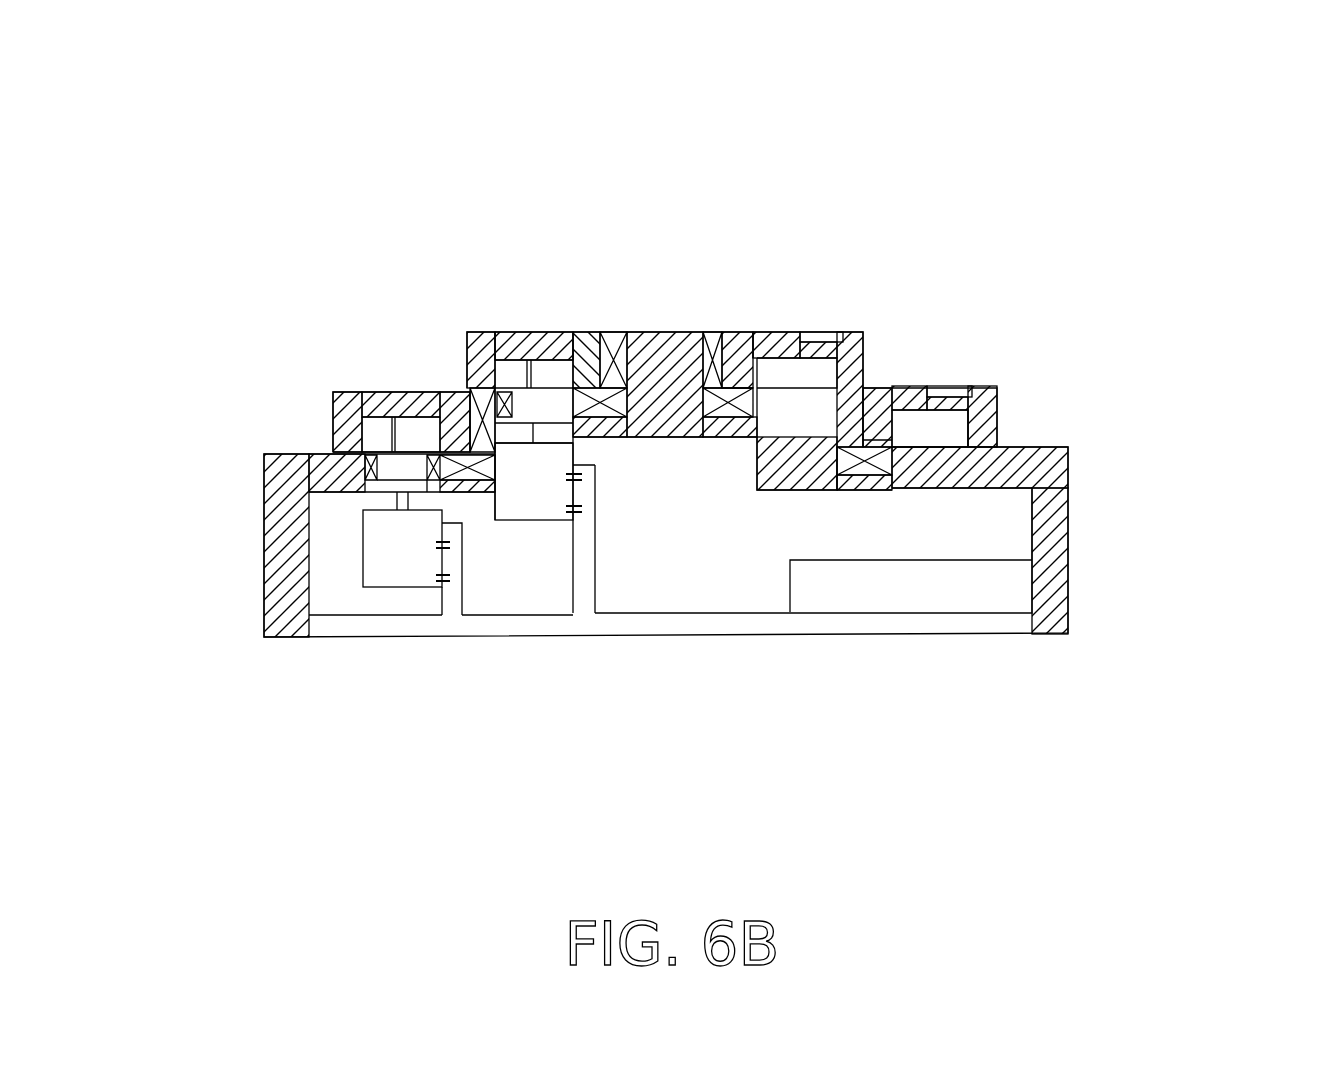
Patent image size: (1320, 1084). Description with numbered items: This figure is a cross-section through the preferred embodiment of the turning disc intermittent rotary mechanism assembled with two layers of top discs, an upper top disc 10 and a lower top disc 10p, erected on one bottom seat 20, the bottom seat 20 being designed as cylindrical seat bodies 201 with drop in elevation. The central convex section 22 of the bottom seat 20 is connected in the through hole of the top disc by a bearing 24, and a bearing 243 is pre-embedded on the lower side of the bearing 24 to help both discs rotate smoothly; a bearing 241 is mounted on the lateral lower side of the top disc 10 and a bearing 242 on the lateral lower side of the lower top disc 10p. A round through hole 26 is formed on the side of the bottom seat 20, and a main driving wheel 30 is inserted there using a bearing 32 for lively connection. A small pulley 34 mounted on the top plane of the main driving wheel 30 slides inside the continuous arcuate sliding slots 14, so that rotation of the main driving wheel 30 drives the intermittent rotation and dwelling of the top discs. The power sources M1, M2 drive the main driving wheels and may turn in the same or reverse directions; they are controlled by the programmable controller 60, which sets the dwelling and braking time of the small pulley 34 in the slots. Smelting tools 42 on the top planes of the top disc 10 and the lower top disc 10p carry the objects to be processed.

The bottom seat 20 is at (1072, 507).
The cylindrical seat body 201 is at (1047, 473).
The central convex section 22 is at (670, 345).
The bearing 24 is at (715, 335).
The bearing 241 is at (848, 445).
The bearing 242 is at (862, 443).
The bearing 243 is at (752, 335).
The round through hole 26 is at (515, 432).
The main driving wheel 30 is at (540, 407).
The bearing 32 is at (490, 358).
The small pulley 34 is at (538, 375).
The sliding slots 14 is at (947, 432).
The top disc 10 is at (790, 335).
The top disc 10p is at (988, 400).
The smelting tools 42 is at (948, 390).
The programmable controller 60 is at (940, 590).
The power source M1 is at (402, 557).
The power source M2 is at (553, 505).